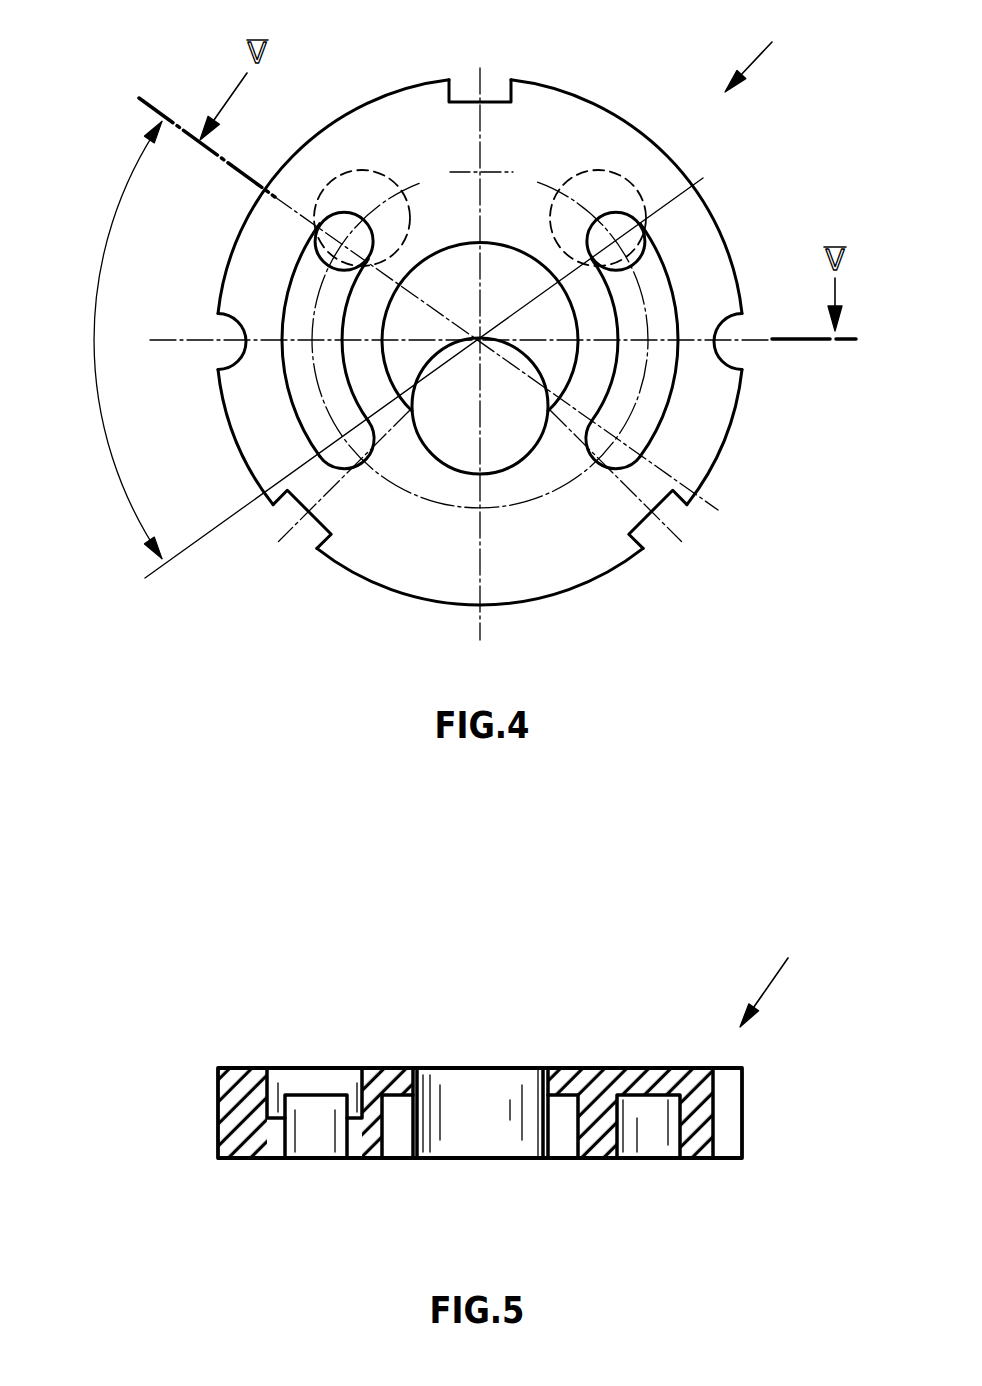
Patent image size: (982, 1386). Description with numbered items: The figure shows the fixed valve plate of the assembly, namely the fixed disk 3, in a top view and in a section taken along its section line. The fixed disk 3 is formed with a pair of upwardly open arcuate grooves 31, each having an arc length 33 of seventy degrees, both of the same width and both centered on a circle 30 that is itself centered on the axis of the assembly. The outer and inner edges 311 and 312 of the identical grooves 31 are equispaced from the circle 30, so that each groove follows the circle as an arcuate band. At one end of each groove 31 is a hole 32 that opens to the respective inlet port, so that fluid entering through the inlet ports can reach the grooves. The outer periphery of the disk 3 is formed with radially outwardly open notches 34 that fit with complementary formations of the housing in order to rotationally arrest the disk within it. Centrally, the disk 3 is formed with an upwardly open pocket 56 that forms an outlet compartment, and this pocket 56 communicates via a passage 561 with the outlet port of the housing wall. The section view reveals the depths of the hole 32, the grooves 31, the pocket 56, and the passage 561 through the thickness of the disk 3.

In FIG. 4, the fixed disk 3 is at (761, 46).
In FIG. 5, the fixed disk 3 is at (778, 974).
In FIG. 4, the circle 30 is at (537, 180).
In FIG. 4, the arcuate groove 31 is at (489, 338).
In FIG. 5, the arcuate groove 31 is at (297, 1130).
In FIG. 4, the outer edge 311 is at (280, 373).
In FIG. 4, the inner edge 312 is at (350, 293).
In FIG. 4, the hole 32 is at (352, 172).
In FIG. 5, the hole 32 is at (274, 1078).
In FIG. 4, the arc length 33 is at (93, 312).
In FIG. 4, the notch 34 is at (495, 92).
In FIG. 4, the pocket 56 is at (443, 264).
In FIG. 5, the pocket 56 is at (398, 1135).
In FIG. 4, the passage 561 is at (440, 452).
In FIG. 5, the passage 561 is at (462, 1090).